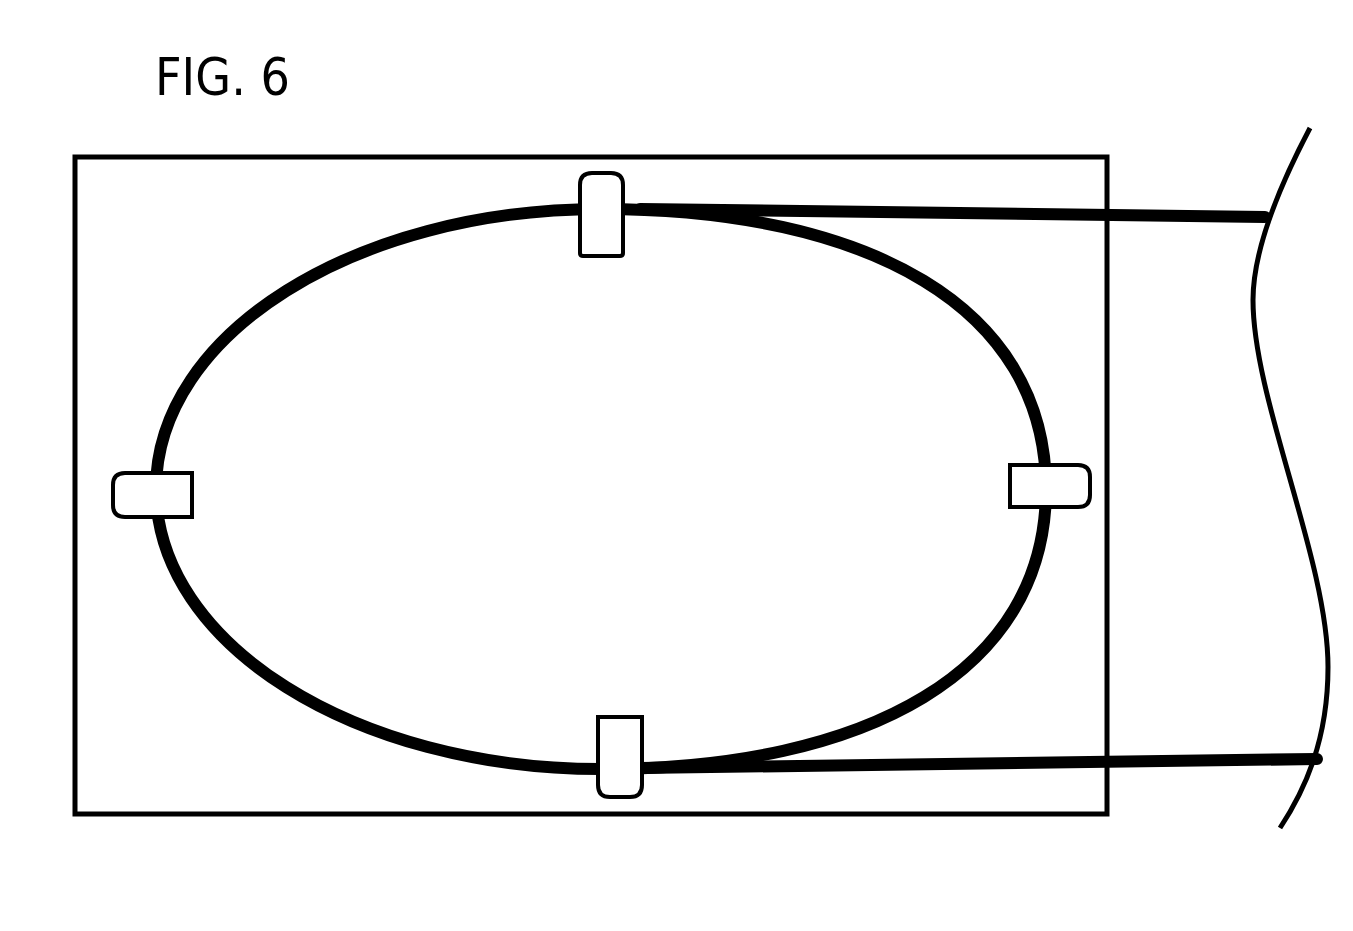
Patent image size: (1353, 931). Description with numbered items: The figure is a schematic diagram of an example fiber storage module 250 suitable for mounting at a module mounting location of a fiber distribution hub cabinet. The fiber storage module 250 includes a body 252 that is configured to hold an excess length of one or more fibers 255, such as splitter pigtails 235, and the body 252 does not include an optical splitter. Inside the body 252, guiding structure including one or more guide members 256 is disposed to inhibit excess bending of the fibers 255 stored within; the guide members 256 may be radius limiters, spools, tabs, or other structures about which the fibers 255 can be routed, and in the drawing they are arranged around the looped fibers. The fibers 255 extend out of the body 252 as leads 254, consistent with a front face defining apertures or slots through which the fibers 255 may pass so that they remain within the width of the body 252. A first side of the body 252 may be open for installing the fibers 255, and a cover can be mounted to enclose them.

The fiber storage module 250 is at (792, 133).
The body 252 is at (591, 447).
The tubing leads 254 is at (978, 459).
The fibers 255 is at (601, 489).
The guide members 256 is at (601, 485).
The splitter pigtails 235 is at (736, 460).